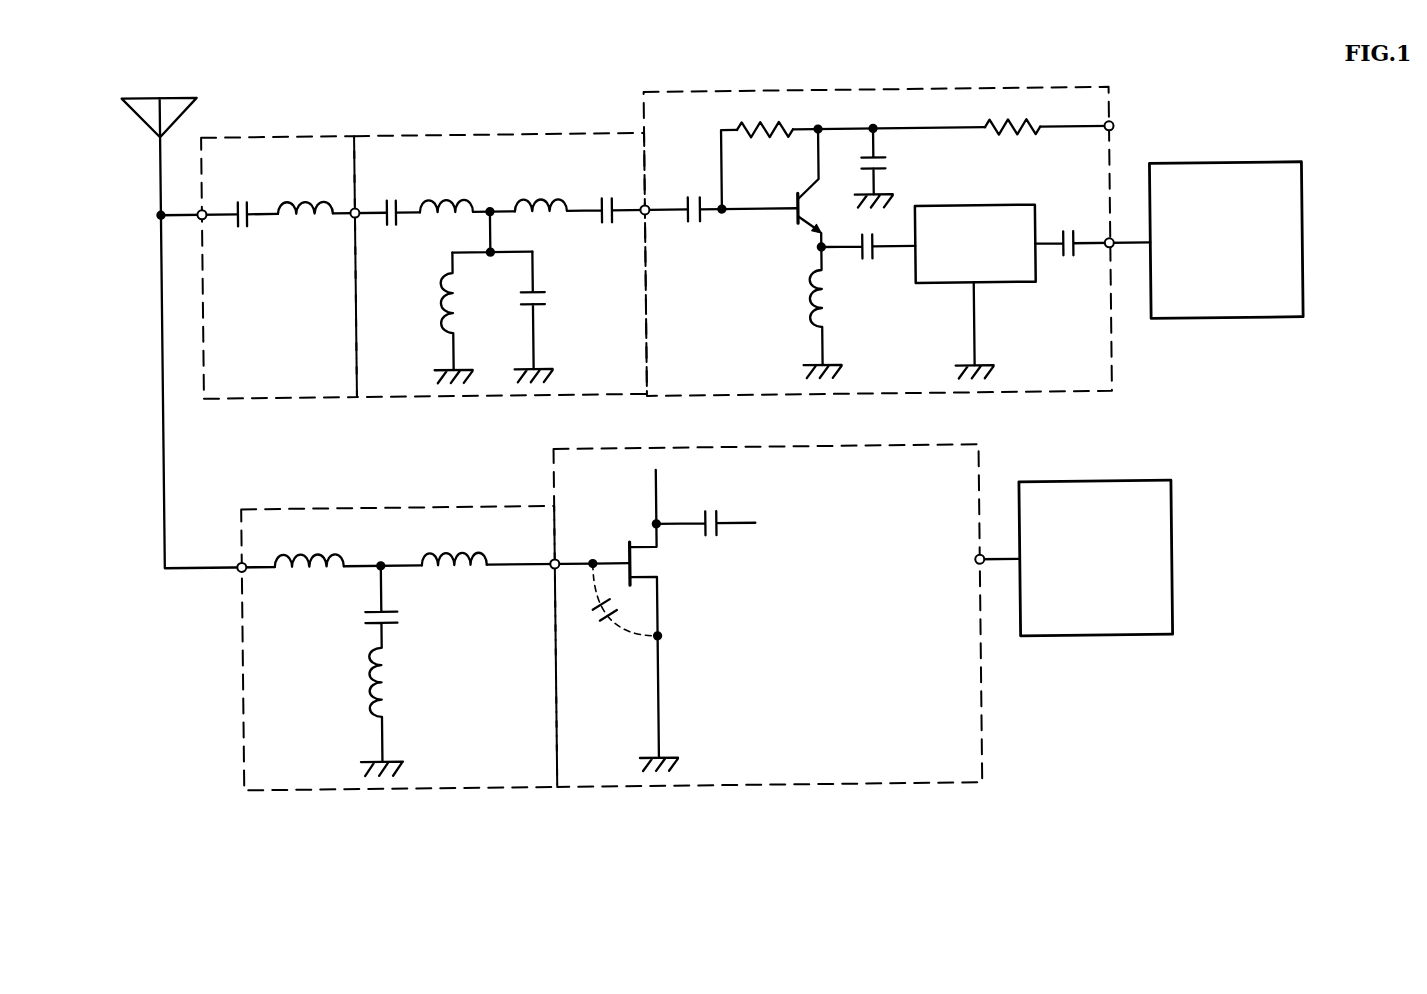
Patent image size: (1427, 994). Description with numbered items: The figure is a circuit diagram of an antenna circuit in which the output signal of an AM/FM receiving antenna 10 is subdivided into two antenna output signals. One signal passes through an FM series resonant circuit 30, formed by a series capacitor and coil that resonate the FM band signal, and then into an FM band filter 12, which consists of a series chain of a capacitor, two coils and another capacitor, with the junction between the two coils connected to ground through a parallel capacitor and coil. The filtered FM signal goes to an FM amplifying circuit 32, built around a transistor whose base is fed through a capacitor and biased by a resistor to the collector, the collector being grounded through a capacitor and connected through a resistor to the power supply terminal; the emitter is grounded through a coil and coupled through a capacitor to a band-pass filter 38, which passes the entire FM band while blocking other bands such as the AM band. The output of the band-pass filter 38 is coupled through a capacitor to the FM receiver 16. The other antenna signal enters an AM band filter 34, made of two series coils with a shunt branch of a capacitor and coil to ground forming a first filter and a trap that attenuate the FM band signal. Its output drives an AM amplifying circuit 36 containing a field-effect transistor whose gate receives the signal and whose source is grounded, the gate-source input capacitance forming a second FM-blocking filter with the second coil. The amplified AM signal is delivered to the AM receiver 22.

The AM/FM receiving antenna 10 is at (169, 89).
The FM series resonant circuit 30 is at (324, 131).
The FM band filter 12 is at (494, 132).
The FM amplifying circuit 32 is at (903, 208).
The band-pass filter 38 is at (926, 287).
The FM receiver 16 is at (1215, 326).
The AM band filter 34 is at (313, 787).
The AM amplifying circuit 36 is at (608, 787).
The AM receiver 22 is at (1087, 642).